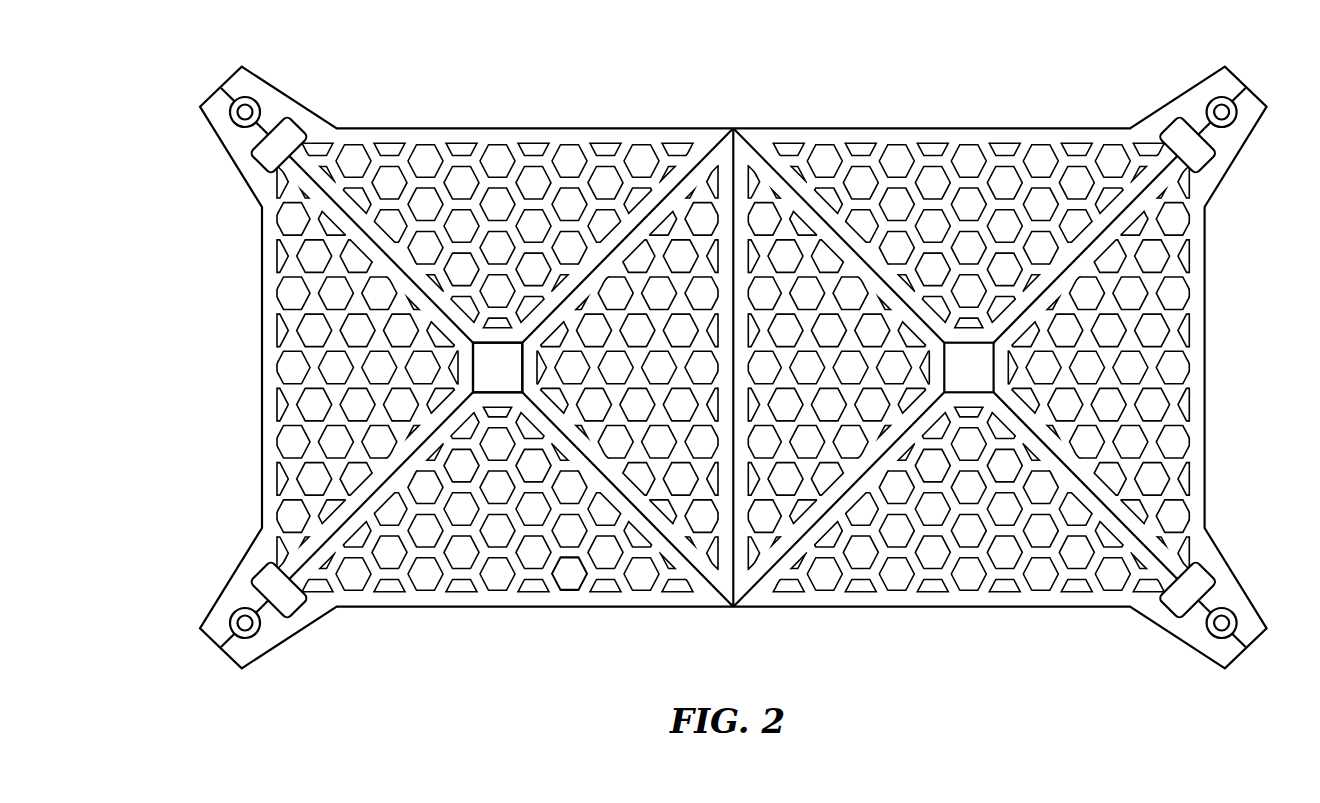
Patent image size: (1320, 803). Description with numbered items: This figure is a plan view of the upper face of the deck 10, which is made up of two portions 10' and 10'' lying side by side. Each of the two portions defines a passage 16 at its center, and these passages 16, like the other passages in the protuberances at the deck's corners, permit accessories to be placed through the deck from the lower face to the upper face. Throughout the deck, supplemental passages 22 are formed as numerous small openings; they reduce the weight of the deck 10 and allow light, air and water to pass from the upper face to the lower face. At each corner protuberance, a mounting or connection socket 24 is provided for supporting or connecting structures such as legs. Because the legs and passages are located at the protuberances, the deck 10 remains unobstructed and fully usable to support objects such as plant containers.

The deck 10 is at (701, 360).
The first portion of the deck 10' is at (497, 401).
The second portion of the deck 10'' is at (969, 401).
The passage 16 is at (493, 360).
The supplemental passage 22 is at (569, 576).
The mounting or connection socket 24 is at (1219, 108).